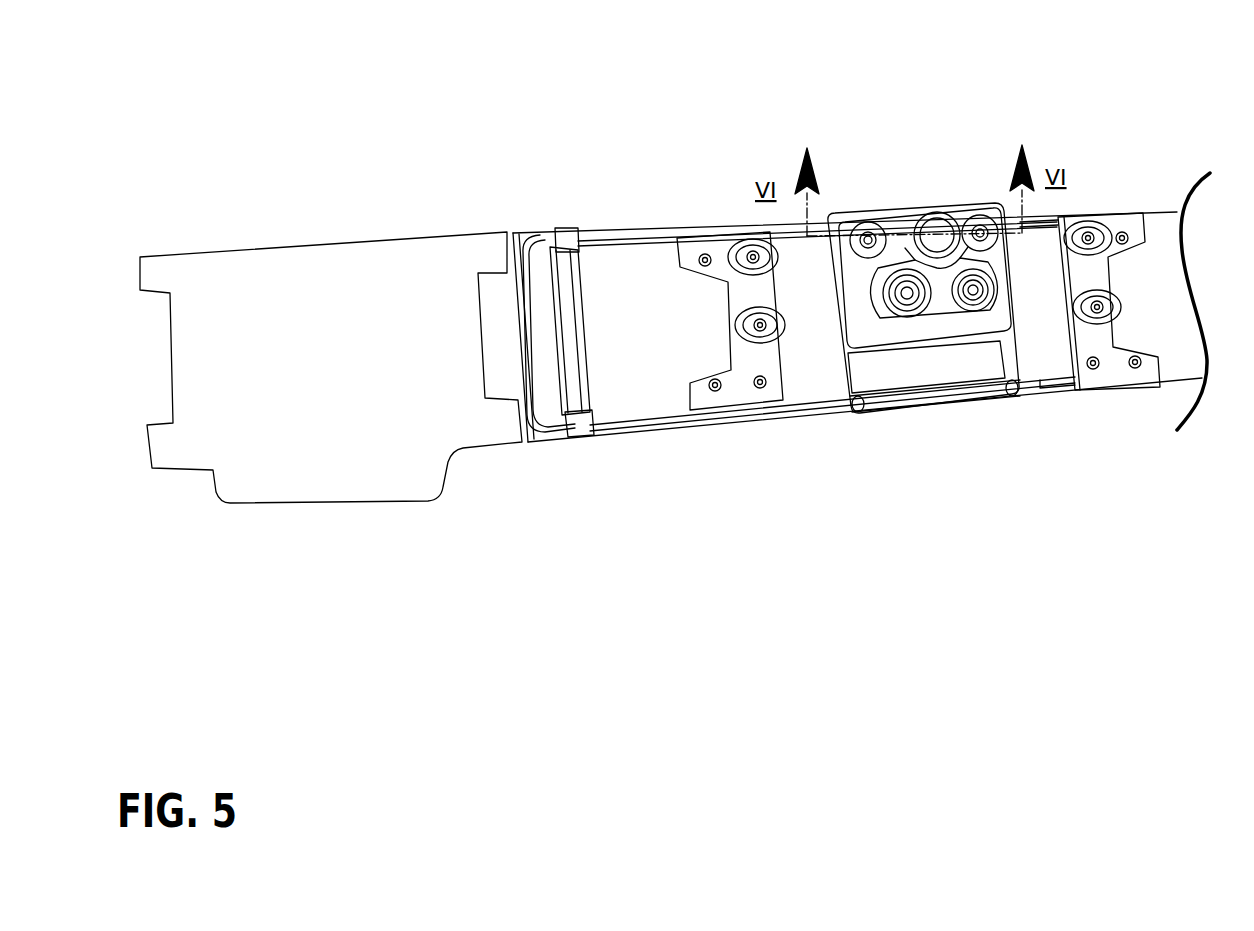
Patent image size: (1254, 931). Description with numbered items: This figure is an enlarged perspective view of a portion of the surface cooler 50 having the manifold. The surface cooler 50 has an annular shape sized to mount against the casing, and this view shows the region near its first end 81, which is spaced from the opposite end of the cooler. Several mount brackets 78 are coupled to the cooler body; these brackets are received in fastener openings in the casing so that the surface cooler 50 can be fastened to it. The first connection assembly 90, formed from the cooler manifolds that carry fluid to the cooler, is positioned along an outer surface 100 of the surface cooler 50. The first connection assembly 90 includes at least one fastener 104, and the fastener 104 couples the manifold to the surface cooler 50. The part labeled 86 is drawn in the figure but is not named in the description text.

The surface cooler 50 is at (517, 135).
The mount brackets 78 is at (695, 248).
The first end 81 is at (1029, 362).
The cover plate 86 is at (285, 178).
The first connection assembly 90 is at (916, 180).
The outer surface 100 is at (1160, 300).
The fastener 104 is at (867, 233).